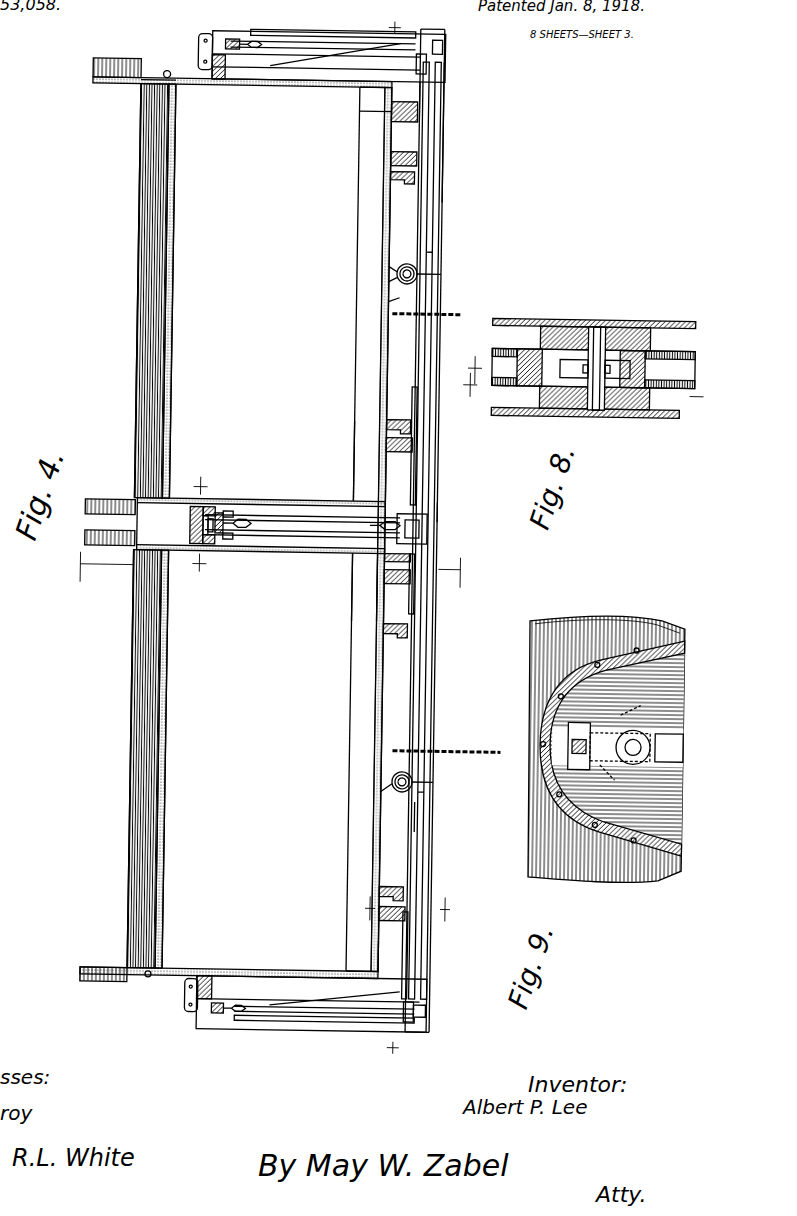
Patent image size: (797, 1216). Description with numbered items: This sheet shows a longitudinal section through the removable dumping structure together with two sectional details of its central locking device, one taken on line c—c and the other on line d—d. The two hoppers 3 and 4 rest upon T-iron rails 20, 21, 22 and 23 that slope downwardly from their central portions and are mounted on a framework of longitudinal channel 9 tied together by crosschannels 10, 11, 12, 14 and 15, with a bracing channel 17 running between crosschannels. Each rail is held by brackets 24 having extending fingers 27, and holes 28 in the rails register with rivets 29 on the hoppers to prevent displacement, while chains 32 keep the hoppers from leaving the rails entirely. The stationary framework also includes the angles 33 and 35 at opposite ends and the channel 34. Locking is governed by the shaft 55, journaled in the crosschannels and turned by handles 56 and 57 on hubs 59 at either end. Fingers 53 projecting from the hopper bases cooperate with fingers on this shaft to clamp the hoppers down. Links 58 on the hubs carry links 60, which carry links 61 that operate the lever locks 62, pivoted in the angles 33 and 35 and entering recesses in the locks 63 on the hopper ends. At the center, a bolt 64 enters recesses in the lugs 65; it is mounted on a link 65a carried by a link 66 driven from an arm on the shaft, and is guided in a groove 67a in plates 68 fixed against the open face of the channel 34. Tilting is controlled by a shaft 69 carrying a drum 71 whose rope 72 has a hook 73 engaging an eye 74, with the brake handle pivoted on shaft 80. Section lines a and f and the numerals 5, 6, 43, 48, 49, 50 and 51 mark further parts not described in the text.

In FIG. 4, the hopper 3 is at (141, 680).
In FIG. 8, the hopper 3 is at (510, 417).
In FIG. 4, the hopper 4 is at (144, 340).
In FIG. 8, the hopper 4 is at (510, 320).
In FIG. 9, the hopper 4 is at (580, 625).
In FIG. 4, the rail support 5 is at (448, 511).
In FIG. 4, the section line 6 is at (384, 542).
In FIG. 4, the channel 9 is at (440, 530).
In FIG. 4, the crosschannel 10 is at (444, 970).
In FIG. 4, the crosschannel 11 is at (434, 531).
In FIG. 4, the crosschannel 12 is at (435, 587).
In FIG. 4, the crosschannel 14 is at (444, 160).
In FIG. 4, the crosschannel 15 is at (442, 102).
In FIG. 4, the bracing channel 17 is at (443, 793).
In FIG. 4, the rail 20 is at (361, 956).
In FIG. 4, the rail 21 is at (397, 551).
In FIG. 4, the rail 22 is at (387, 140).
In FIG. 4, the rail 23 is at (404, 101).
In FIG. 4, the bracket 24 is at (363, 108).
In FIG. 4, the extending finger 27 is at (343, 461).
In FIG. 4, the hole 28 is at (361, 714).
In FIG. 4, the rivet 29 is at (352, 752).
In FIG. 4, the chain 32 is at (453, 312).
In FIG. 4, the angle 33 is at (304, 1000).
In FIG. 4, the channel 34 is at (197, 527).
In FIG. 8, the channel 34 is at (495, 355).
In FIG. 9, the channel 34 is at (620, 660).
In FIG. 4, the angle 35 is at (293, 68).
In FIG. 4, the stop 43 is at (444, 440).
In FIG. 4, the bracket 48 is at (136, 61).
In FIG. 4, the bracket plate 49 is at (165, 86).
In FIG. 4, the pivot pin 50 is at (165, 73).
In FIG. 4, the latch block 51 is at (399, 535).
In FIG. 4, the catch finger 53 is at (404, 182).
In FIG. 4, the shaft 55 is at (433, 819).
In FIG. 4, the handle 56 is at (300, 36).
In FIG. 4, the handle 57 is at (289, 1021).
In FIG. 4, the link 58 is at (426, 62).
In FIG. 4, the hub 59 is at (442, 44).
In FIG. 4, the link 60 is at (265, 42).
In FIG. 4, the link 61 is at (232, 40).
In FIG. 4, the lever lock 62 is at (198, 52).
In FIG. 4, the lock 63 is at (220, 80).
In FIG. 8, the bolt 64 is at (596, 327).
In FIG. 9, the bolt 64 is at (568, 740).
In FIG. 4, the lug 65 is at (202, 508).
In FIG. 8, the lug 65 is at (555, 327).
In FIG. 4, the link 65a is at (213, 545).
In FIG. 8, the link 65a is at (612, 373).
In FIG. 9, the link 65a is at (629, 700).
In FIG. 4, the link 66 is at (287, 516).
In FIG. 4, the groove 67a is at (218, 545).
In FIG. 8, the groove 67a is at (605, 340).
In FIG. 9, the groove 67a is at (603, 780).
In FIG. 4, the plate 68 is at (235, 512).
In FIG. 8, the plate 68 is at (540, 335).
In FIG. 9, the plate 68 is at (667, 751).
In FIG. 4, the shaft 69 is at (408, 262).
In FIG. 4, the drum 71 is at (372, 520).
In FIG. 4, the rope or cable 72 is at (444, 270).
In FIG. 4, the hook 73 is at (375, 507).
In FIG. 4, the eye 74 is at (373, 535).
In FIG. 4, the shaft 80 is at (444, 250).
In FIG. 4, the section line a is at (405, 909).
In FIG. 4, the section line c— c is at (200, 523).
In FIG. 4, the section line d— d is at (467, 377).
In FIG. 8, the section line d— d is at (583, 377).
In FIG. 4, the section line f is at (265, 569).